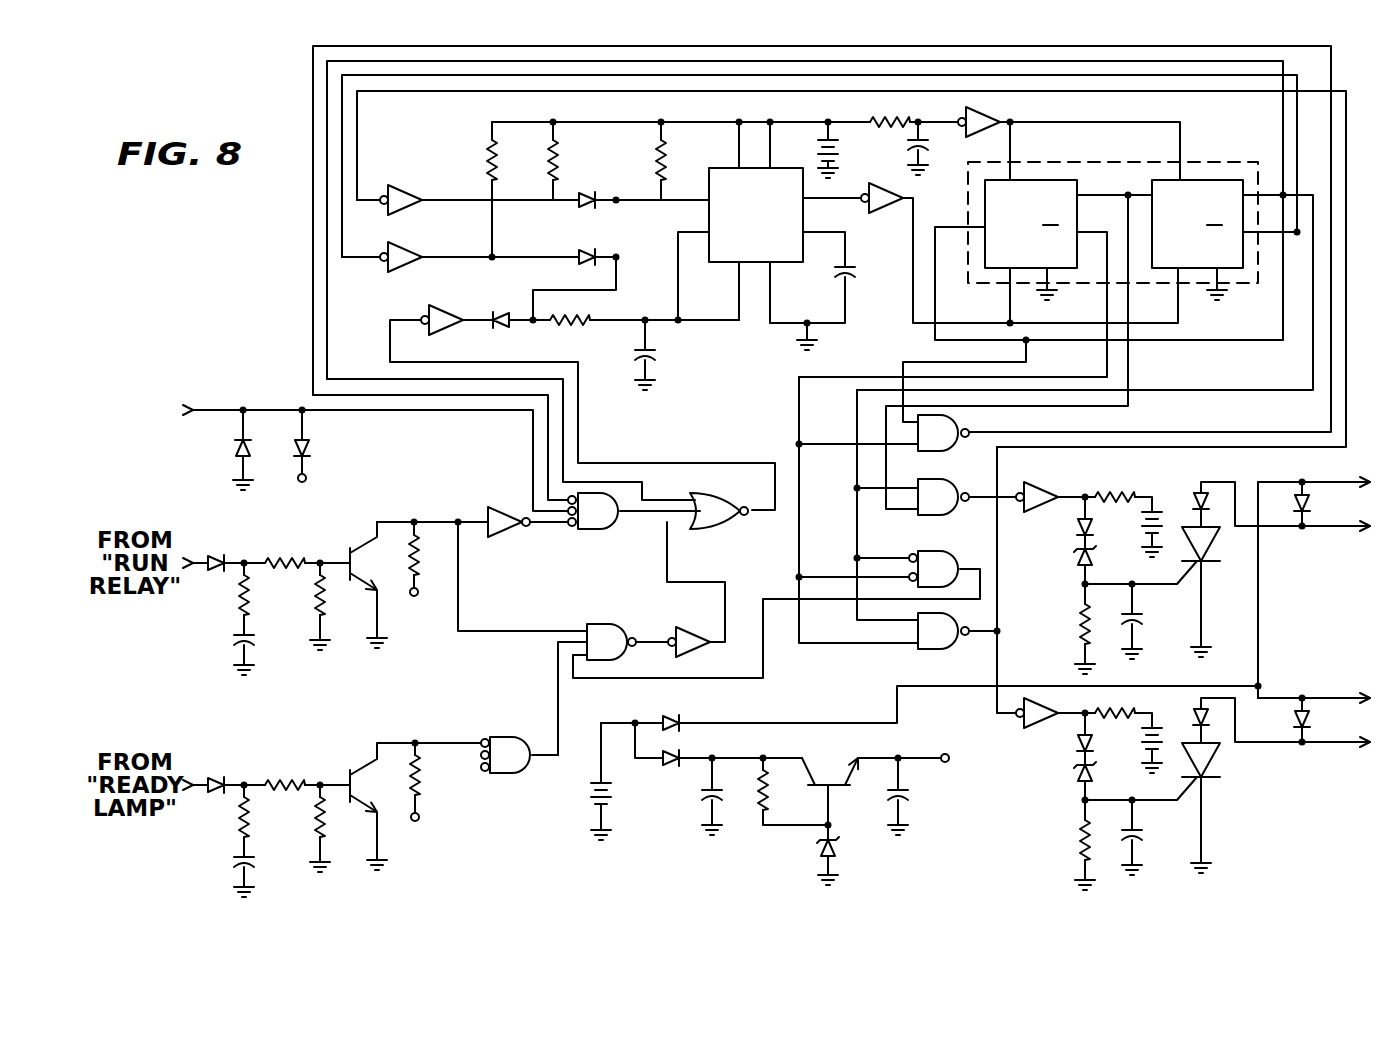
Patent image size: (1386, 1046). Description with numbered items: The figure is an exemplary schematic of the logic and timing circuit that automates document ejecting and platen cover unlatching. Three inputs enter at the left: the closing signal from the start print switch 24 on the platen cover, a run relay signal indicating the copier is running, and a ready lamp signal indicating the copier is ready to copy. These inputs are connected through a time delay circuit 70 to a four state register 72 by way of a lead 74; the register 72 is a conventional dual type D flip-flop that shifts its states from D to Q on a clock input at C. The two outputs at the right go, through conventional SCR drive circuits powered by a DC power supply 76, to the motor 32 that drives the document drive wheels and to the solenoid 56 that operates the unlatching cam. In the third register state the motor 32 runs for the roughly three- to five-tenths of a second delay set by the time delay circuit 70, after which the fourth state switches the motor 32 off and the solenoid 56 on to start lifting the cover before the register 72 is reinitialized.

The time delay circuit 70 is at (642, 163).
The four state register 72 is at (1111, 157).
The lead 74 is at (913, 262).
The DC power supply 76 is at (700, 716).
The start print switch 24 is at (324, 442).
The electric motor 32 is at (1197, 587).
The solenoid 56 is at (1200, 791).